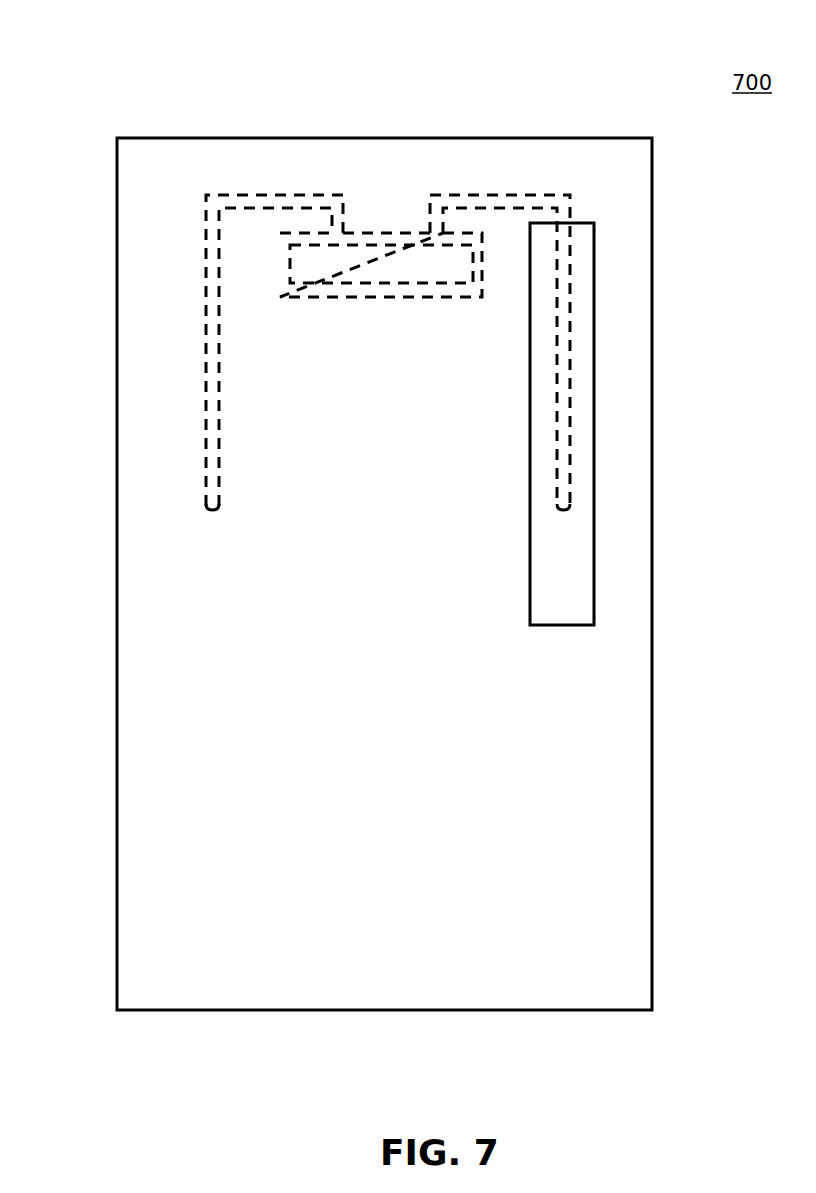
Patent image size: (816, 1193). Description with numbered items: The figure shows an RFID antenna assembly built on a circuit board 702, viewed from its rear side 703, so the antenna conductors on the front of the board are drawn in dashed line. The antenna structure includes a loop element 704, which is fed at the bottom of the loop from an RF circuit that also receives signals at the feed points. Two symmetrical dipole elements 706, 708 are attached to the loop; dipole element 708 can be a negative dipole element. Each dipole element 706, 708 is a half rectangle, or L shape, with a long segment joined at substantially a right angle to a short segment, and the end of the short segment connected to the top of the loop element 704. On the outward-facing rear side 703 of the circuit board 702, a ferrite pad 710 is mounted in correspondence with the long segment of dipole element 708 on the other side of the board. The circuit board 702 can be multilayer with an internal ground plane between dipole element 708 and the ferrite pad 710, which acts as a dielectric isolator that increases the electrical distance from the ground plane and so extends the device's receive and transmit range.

The circuit board 702 is at (118, 841).
The rear side 703 is at (416, 795).
The loop element 704 is at (365, 297).
The dipole element 706 is at (203, 255).
The dipole element 708 is at (568, 285).
The ferrite pad 710 is at (594, 548).